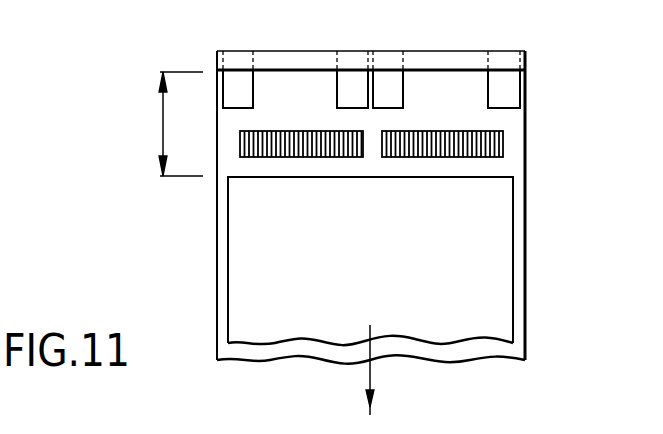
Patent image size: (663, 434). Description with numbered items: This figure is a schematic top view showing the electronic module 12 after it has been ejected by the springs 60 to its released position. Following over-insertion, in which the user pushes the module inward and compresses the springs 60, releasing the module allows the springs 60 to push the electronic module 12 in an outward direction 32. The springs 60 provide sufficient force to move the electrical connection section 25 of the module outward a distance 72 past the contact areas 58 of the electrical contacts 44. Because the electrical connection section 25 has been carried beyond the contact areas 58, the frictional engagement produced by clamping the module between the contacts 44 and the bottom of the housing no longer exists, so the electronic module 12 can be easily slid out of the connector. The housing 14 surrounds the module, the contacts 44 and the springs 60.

The electronic module 12 is at (497, 283).
The housing header 14 is at (525, 72).
The electrical connection section 25 is at (508, 202).
The outward direction 32 is at (371, 375).
The electrical contacts 44 is at (492, 131).
The contact areas 58 is at (498, 145).
The springs 60 is at (343, 92).
The distance 72 is at (163, 125).